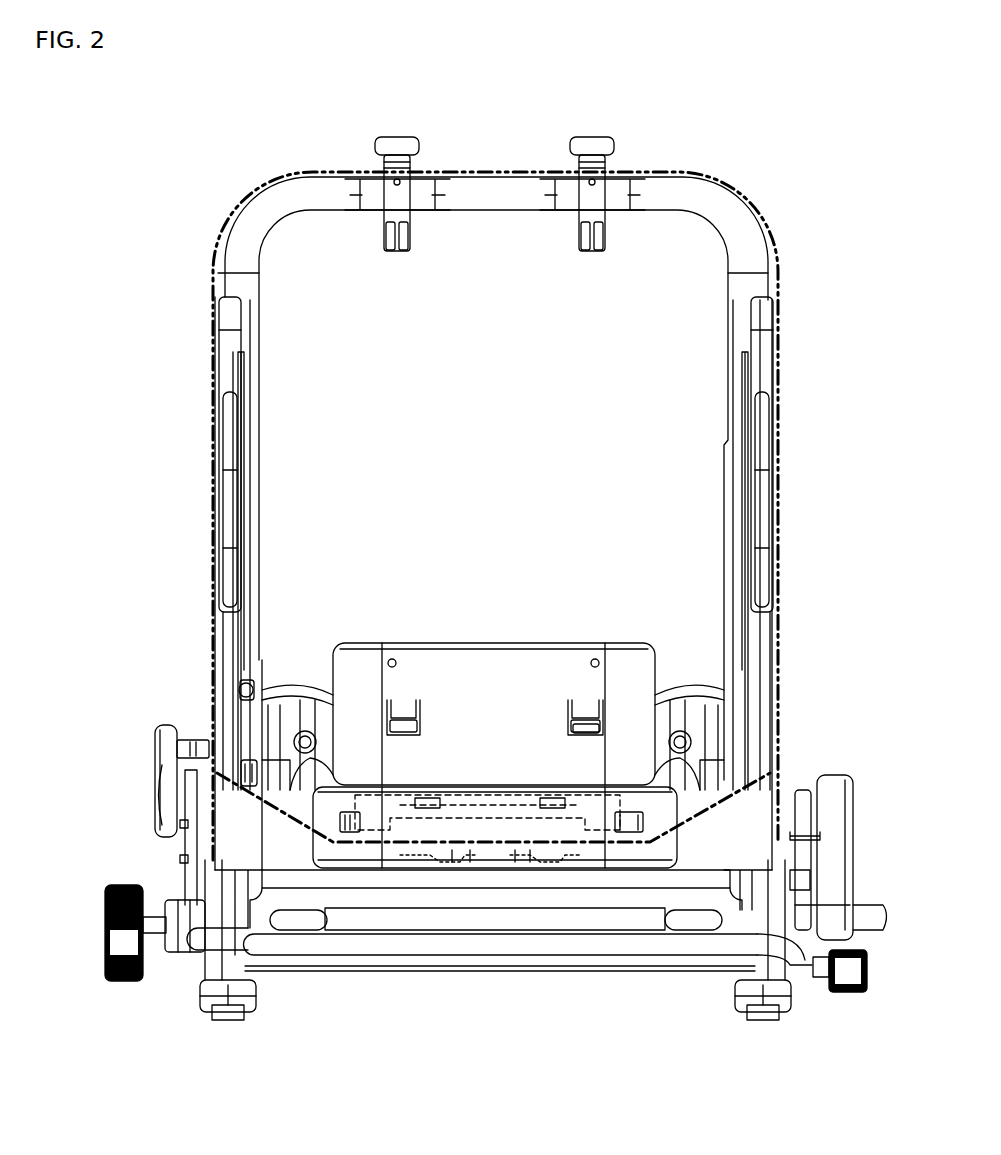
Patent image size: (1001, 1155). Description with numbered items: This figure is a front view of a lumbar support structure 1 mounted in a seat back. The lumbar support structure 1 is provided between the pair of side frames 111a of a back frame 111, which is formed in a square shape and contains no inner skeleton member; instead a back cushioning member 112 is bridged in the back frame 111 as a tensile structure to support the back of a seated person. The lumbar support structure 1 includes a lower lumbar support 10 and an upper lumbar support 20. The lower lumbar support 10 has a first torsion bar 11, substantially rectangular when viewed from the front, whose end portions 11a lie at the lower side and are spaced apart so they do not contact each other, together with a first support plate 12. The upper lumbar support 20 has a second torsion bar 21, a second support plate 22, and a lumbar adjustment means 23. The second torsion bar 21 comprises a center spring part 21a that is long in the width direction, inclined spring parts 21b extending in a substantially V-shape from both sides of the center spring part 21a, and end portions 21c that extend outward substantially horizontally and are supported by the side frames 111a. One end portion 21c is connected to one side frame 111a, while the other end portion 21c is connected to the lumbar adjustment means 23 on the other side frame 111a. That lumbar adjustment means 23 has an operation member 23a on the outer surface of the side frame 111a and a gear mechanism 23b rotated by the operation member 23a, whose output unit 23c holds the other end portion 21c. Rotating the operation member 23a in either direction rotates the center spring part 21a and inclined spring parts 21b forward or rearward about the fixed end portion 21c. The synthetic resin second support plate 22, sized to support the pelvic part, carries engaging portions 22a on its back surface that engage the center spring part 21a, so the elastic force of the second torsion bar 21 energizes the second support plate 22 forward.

The lumbar support structure 1 is at (578, 810).
The lower lumbar support 10 is at (740, 775).
The first torsion bar 11 is at (414, 877).
The end portion 11a is at (460, 860).
The first support plate 12 is at (445, 785).
The upper lumbar support 20 is at (561, 812).
The second torsion bar 21 is at (541, 807).
The center spring part 21a is at (585, 730).
The inclined spring part 21b is at (290, 722).
The end portion 21c is at (317, 860).
The second support plate 22 is at (494, 688).
The engaging portion 22a is at (405, 712).
The lumbar adjustment means 23 is at (158, 776).
The operation member 23a is at (156, 793).
The gear mechanism 23b is at (248, 680).
The output unit 23c is at (255, 775).
The back frame 111 is at (263, 212).
The side frame 111a is at (240, 455).
The back cushioning member 112 is at (771, 212).